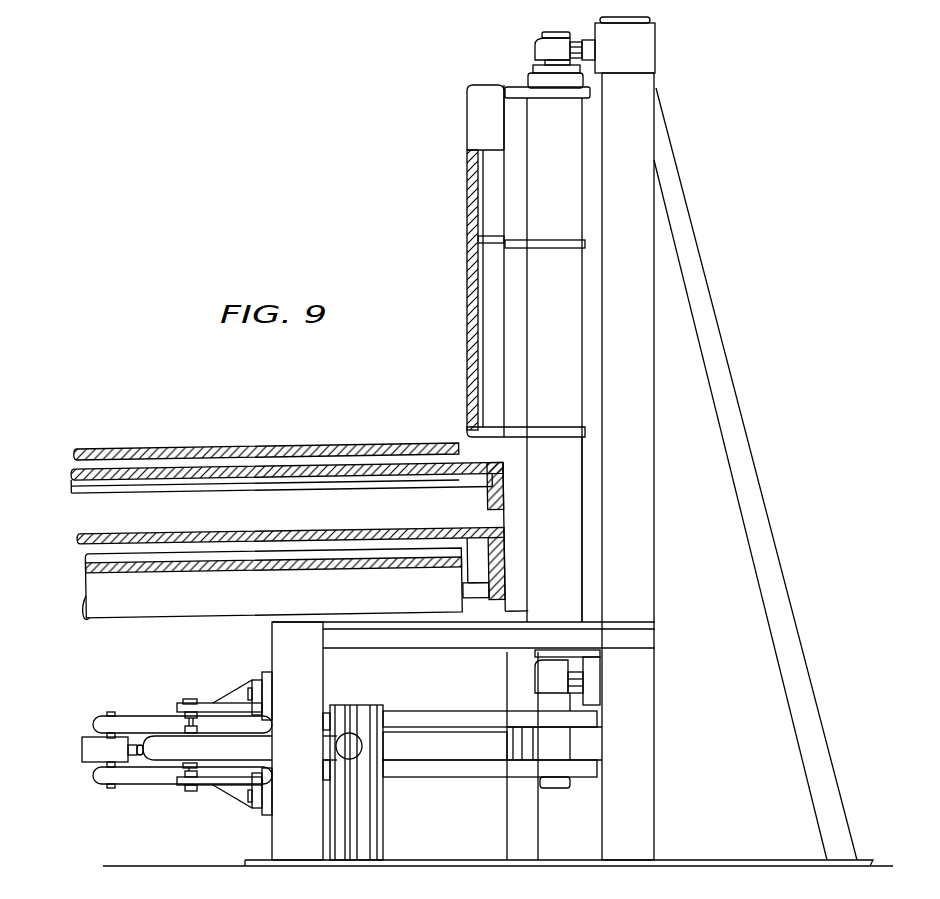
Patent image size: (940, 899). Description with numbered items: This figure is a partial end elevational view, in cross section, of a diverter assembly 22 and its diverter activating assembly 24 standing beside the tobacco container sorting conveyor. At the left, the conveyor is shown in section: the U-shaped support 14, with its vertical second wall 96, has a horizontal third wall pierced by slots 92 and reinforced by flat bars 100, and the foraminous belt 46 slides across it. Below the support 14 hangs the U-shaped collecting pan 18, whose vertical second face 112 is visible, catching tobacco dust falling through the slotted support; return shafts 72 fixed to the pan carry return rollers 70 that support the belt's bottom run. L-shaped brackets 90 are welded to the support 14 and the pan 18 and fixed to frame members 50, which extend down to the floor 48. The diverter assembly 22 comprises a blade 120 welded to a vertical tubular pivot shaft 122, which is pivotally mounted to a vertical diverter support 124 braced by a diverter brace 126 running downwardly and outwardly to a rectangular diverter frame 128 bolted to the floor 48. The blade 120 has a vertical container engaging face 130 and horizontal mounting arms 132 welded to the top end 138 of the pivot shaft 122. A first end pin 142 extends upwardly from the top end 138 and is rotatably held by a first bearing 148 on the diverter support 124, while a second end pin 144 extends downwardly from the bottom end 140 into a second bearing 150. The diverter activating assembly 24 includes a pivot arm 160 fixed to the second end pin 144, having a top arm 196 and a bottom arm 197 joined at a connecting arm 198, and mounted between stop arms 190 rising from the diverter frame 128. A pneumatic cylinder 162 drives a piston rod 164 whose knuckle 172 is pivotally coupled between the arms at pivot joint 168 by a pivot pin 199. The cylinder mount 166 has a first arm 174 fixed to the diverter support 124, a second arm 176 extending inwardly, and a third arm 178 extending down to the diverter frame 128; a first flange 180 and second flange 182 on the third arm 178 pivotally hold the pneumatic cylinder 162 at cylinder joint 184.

The support 14 is at (277, 466).
The collecting pan 18 is at (257, 529).
The diverter assembly 22 is at (432, 137).
The diverter activating assembly 24 is at (119, 699).
The foraminous belt 46 is at (148, 446).
The floor 48 is at (888, 858).
The frame members 50 is at (507, 670).
The return rollers 70 is at (150, 616).
The return shafts 72 is at (478, 604).
The brackets 90 is at (498, 518).
The slots 92 is at (221, 466).
The second wall 96 is at (488, 504).
The flat bars 100 is at (350, 487).
The second face 112 is at (504, 557).
The blade 120 is at (466, 212).
The pivot shaft 122 is at (582, 508).
The diverter support 124 is at (655, 407).
The diverter brace 126 is at (728, 354).
The diverter frame 128 is at (673, 858).
The container engaging face 130 is at (465, 267).
The mounting arms 132 is at (510, 100).
The top end 138 is at (587, 80).
The bottom end 140 is at (593, 658).
The first end pin 142 is at (540, 38).
The second end pin 144 is at (550, 788).
The first bearing 148 is at (538, 66).
The second bearing 150 is at (535, 692).
The pivot arm 160 is at (128, 715).
The pneumatic cylinder 162 is at (280, 762).
The piston rod 164 is at (142, 760).
The cylinder mount 166 is at (633, 616).
The pivot joint 168 is at (108, 712).
The knuckle 172 is at (82, 752).
The first arm 174 is at (656, 640).
The second arm 176 is at (377, 652).
The third arm 178 is at (272, 644).
The first flange 180 is at (203, 703).
The second flange 182 is at (203, 788).
The cylinder joint 184 is at (190, 791).
The stop arms 190 is at (383, 805).
The top arm 196 is at (433, 730).
The bottom arm 197 is at (457, 778).
The connecting arm 198 is at (522, 746).
The pivot pin 199 is at (110, 785).